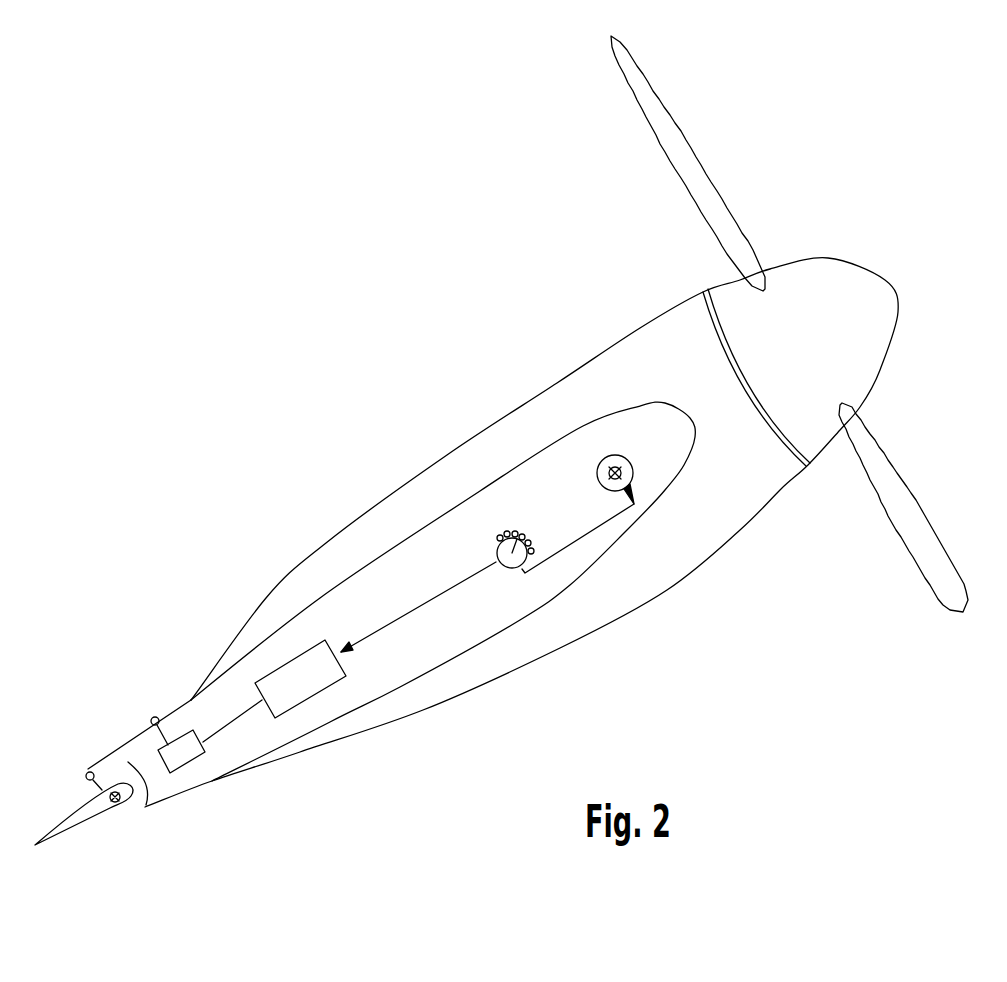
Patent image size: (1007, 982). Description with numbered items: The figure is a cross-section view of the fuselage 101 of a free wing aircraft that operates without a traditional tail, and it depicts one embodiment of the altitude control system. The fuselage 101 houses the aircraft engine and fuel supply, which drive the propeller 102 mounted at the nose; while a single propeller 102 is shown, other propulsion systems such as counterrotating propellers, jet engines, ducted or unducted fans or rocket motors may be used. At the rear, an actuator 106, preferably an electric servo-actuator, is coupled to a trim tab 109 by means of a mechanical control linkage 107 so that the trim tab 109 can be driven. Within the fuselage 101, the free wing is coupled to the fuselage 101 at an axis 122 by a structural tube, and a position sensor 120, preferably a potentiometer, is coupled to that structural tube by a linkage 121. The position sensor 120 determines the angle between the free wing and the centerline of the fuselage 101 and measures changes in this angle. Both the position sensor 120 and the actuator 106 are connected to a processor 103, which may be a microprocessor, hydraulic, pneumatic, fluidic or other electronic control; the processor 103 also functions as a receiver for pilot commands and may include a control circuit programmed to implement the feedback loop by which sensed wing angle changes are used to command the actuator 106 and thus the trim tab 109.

The fuselage 101 is at (760, 512).
The propeller 102 is at (897, 328).
The processor 103 is at (310, 685).
The actuator 106 is at (187, 757).
The mechanical control linkage 107 is at (127, 742).
The trim tab 109 is at (82, 833).
The position sensor 120 is at (513, 570).
The linkage 121 is at (577, 548).
The axis 122 is at (633, 468).